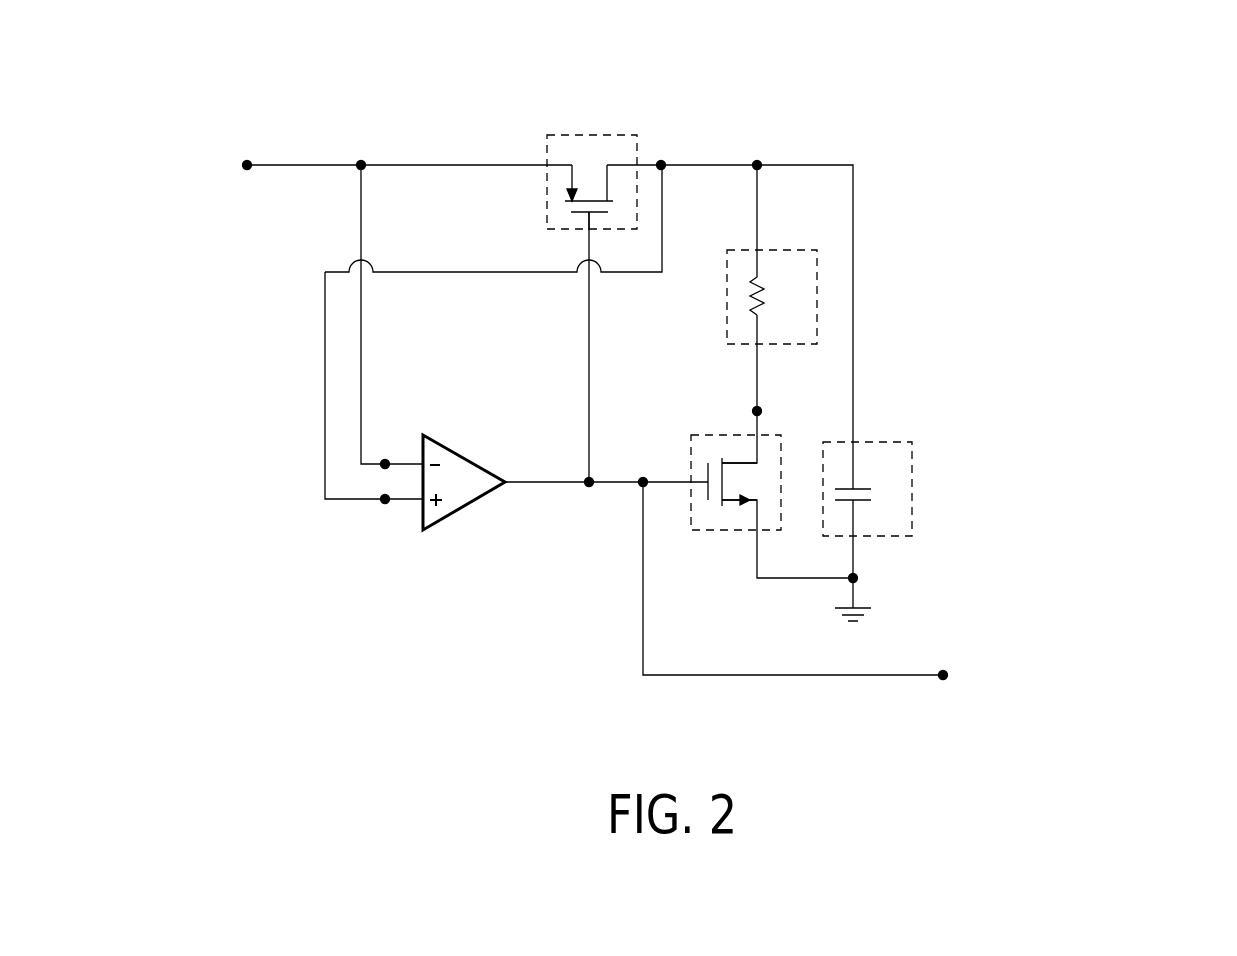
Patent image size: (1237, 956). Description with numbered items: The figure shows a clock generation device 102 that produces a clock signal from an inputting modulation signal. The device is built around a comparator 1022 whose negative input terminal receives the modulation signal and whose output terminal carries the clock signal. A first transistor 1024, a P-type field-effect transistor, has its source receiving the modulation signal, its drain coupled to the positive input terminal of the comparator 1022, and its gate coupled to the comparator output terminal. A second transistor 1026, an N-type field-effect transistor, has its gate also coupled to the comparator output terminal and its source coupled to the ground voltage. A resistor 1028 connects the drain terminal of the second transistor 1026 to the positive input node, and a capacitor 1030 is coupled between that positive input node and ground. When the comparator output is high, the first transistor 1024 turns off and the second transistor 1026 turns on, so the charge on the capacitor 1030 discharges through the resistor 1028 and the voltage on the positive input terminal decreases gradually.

The clock generation device 102 is at (1137, 124).
The comparator 1022 is at (461, 450).
The first transistor 1024 is at (617, 135).
The second transistor 1026 is at (730, 437).
The resistor 1028 is at (727, 300).
The capacitor 1030 is at (912, 461).